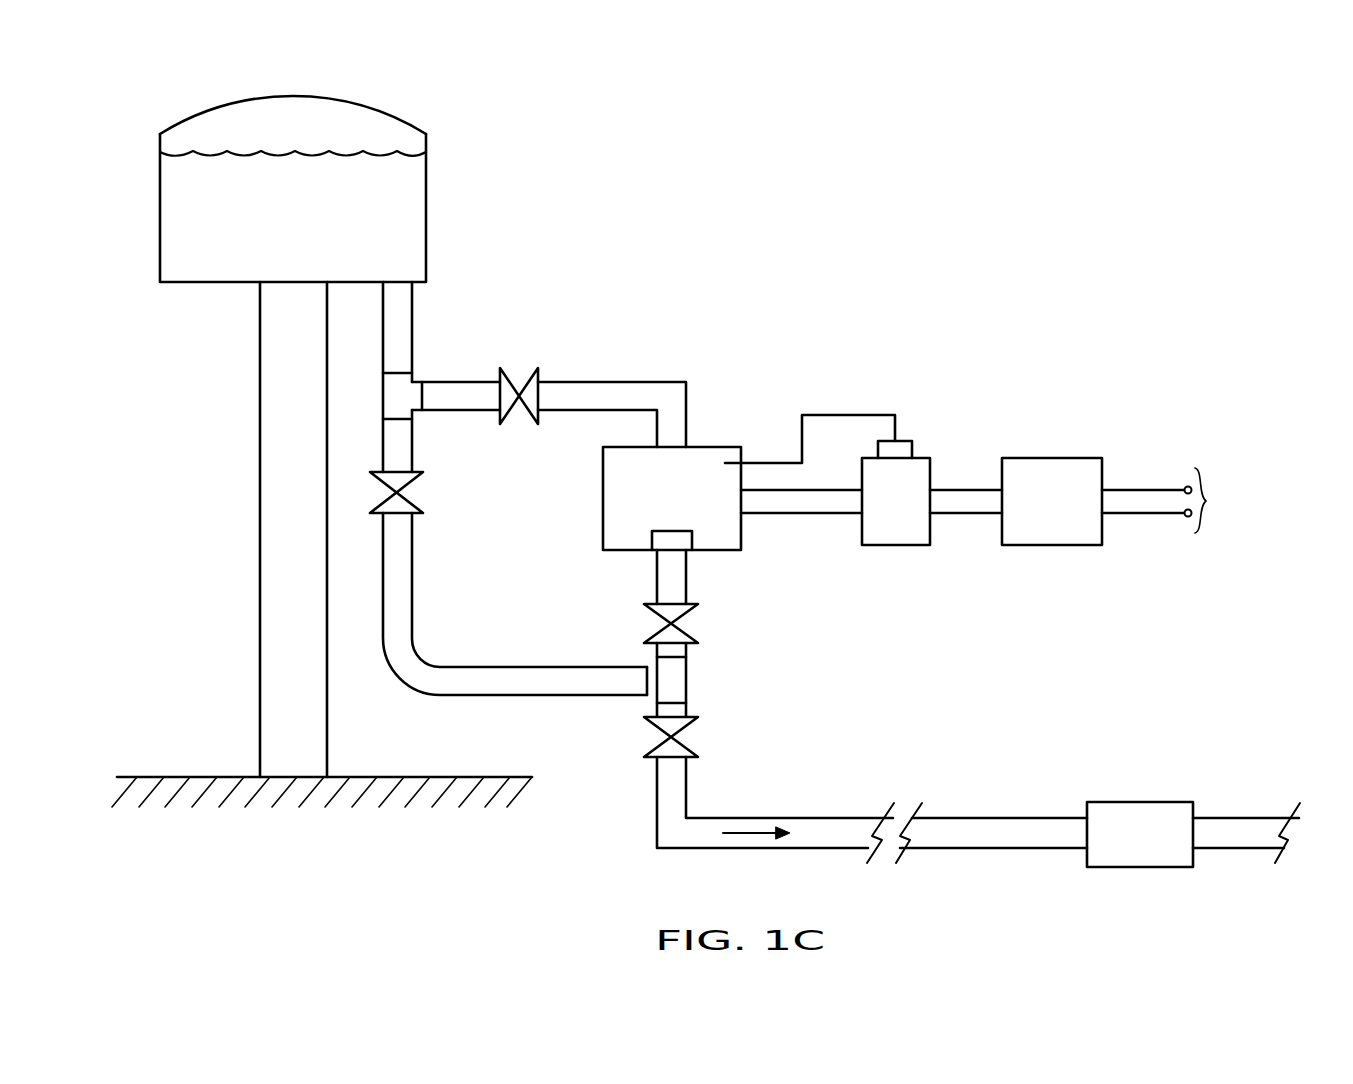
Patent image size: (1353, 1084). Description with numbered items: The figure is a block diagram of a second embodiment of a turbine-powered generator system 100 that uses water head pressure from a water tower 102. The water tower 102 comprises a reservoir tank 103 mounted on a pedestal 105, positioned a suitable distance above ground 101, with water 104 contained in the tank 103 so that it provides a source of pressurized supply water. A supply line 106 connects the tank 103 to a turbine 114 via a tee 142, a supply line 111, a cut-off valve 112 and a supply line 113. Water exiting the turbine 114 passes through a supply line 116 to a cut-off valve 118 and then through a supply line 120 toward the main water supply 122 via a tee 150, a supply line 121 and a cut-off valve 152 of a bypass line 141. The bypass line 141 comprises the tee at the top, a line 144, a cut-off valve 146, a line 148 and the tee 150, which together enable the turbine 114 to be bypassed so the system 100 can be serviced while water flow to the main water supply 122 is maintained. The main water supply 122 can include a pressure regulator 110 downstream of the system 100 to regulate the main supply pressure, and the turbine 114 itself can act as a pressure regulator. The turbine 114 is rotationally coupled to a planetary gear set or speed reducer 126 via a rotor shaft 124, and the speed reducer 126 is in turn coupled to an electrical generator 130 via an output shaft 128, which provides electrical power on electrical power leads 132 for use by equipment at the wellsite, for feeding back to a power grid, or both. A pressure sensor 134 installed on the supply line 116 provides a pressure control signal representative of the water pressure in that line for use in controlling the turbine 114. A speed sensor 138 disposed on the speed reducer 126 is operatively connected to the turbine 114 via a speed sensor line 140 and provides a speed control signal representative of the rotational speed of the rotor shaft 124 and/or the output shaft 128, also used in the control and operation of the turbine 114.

The turbine-powered generator system 100 is at (810, 157).
The ground 101 is at (205, 790).
The water tower 102 is at (382, 99).
The reservoir tank 103 is at (160, 202).
The water 104 is at (397, 195).
The pedestal 105 is at (273, 450).
The supply line 106 is at (400, 308).
The pressure regulator 110 is at (1130, 813).
The supply line 111 is at (465, 393).
The cut-off valve 112 is at (510, 396).
The supply line 113 is at (626, 396).
The turbine 114 is at (700, 457).
The supply line 116 is at (670, 572).
The cut-off valve 118 is at (678, 620).
The supply line 120 is at (670, 650).
The supply line 121 is at (670, 730).
The main water supply 122 is at (820, 830).
The rotor shaft 124 is at (810, 500).
The speed reducer 126 is at (917, 470).
The output shaft 128 is at (968, 503).
The electrical generator 130 is at (1068, 468).
The electrical power leads 132 is at (1208, 500).
The pressure sensor 134 is at (656, 540).
The speed sensor 138 is at (900, 448).
The speed sensor line 140 is at (847, 415).
The bypass line 141 is at (650, 765).
The tee 142 is at (393, 400).
The line 144 is at (402, 448).
The cut-off valve 146 is at (409, 495).
The line 148 is at (400, 577).
The tee 150 is at (670, 688).
The cut-off valve 152 is at (655, 733).